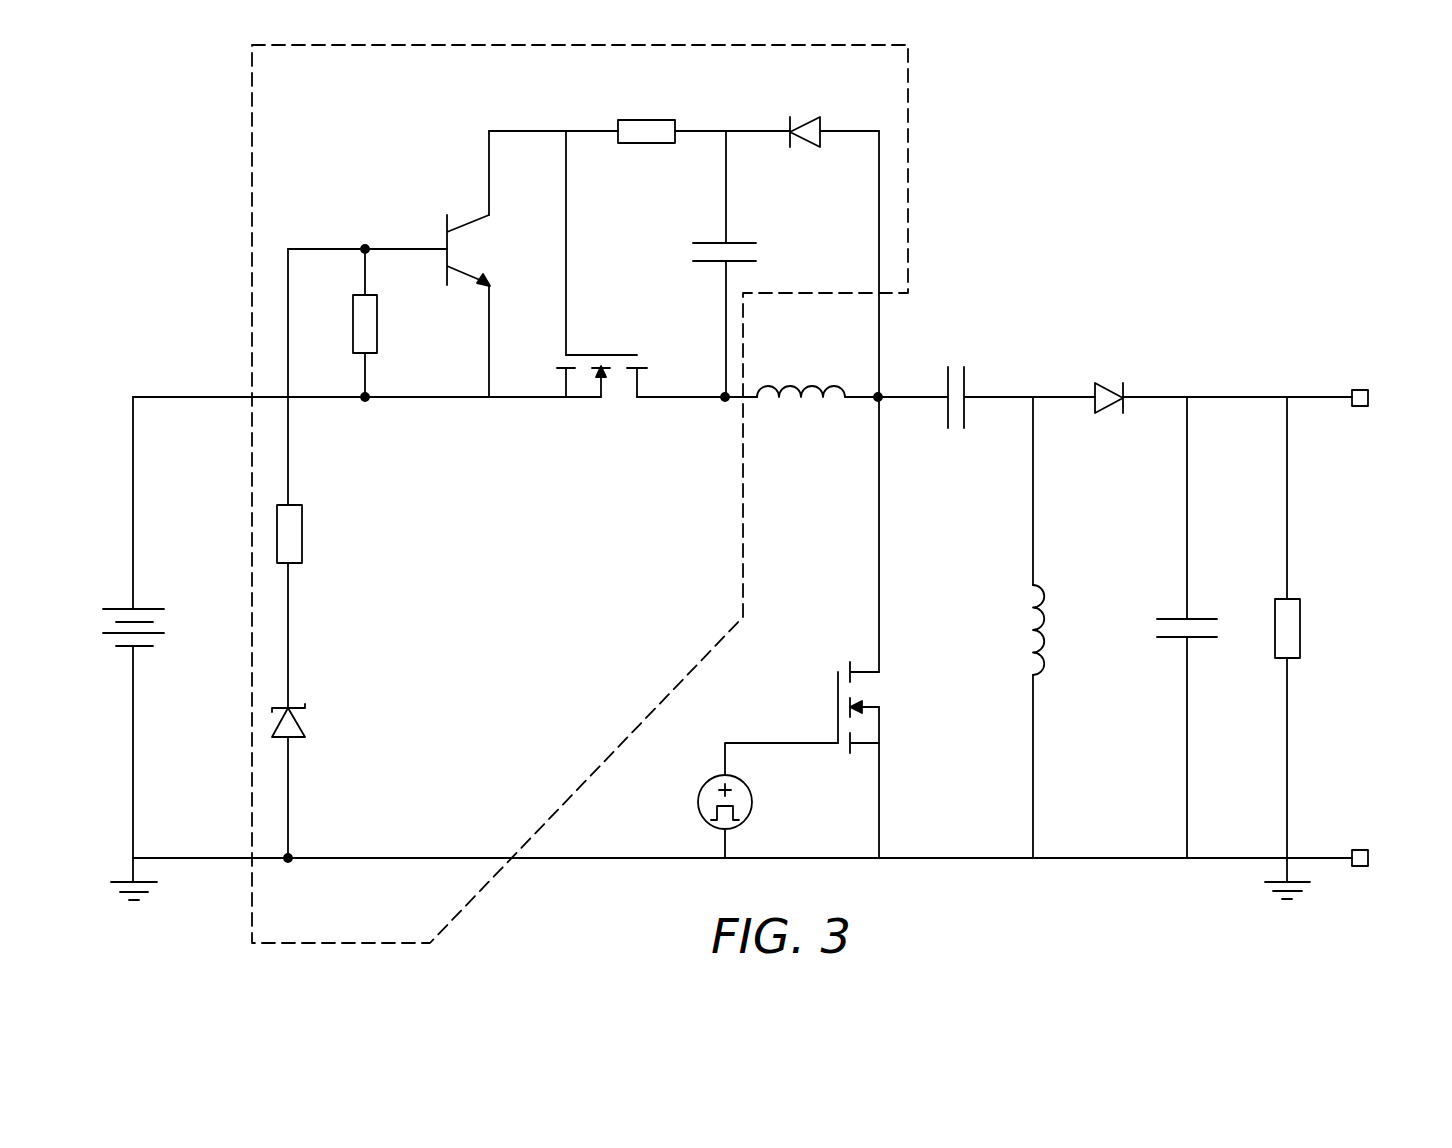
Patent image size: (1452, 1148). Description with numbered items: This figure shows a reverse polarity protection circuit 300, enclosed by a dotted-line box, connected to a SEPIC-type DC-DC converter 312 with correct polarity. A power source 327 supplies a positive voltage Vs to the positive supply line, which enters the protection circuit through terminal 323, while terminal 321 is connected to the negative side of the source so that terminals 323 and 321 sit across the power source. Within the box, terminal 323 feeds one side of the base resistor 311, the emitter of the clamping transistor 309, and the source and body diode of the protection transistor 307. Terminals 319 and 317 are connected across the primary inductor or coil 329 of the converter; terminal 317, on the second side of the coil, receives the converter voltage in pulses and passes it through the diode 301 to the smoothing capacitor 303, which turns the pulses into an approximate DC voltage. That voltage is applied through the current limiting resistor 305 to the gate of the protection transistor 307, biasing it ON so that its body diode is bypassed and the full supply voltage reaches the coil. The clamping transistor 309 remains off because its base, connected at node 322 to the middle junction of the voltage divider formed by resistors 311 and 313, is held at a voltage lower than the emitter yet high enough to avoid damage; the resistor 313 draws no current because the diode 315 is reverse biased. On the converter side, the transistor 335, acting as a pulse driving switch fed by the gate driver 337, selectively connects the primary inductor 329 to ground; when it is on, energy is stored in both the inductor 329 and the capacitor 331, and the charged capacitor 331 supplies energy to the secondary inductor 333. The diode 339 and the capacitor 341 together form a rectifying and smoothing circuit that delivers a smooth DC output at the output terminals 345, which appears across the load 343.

The reverse polarity protection circuit 300 is at (250, 48).
The diode 301 is at (803, 115).
The smoothing capacitor 303 is at (757, 250).
The current limiting resistor 305 is at (640, 118).
The protection transistor 307 is at (615, 353).
The clamping transistor 309 is at (481, 247).
The base resistor 311 is at (379, 320).
The DC-DC converter 312 is at (1222, 308).
The resistor 313 is at (303, 530).
The diode 315 is at (306, 730).
The terminal 317 is at (877, 405).
The terminal 319 is at (725, 405).
The terminal 321 is at (288, 866).
The node 322 is at (365, 243).
The terminal 323 is at (365, 406).
The power source 327 is at (165, 620).
The primary inductor 329 is at (800, 386).
The capacitor 331 is at (948, 365).
The secondary inductor 333 is at (1031, 630).
The transistor 335 is at (836, 683).
The gate driver 337 is at (697, 800).
The diode 339 is at (1103, 416).
The capacitor 341 is at (1155, 630).
The load 343 is at (1302, 625).
The output terminals 345 is at (1404, 857).